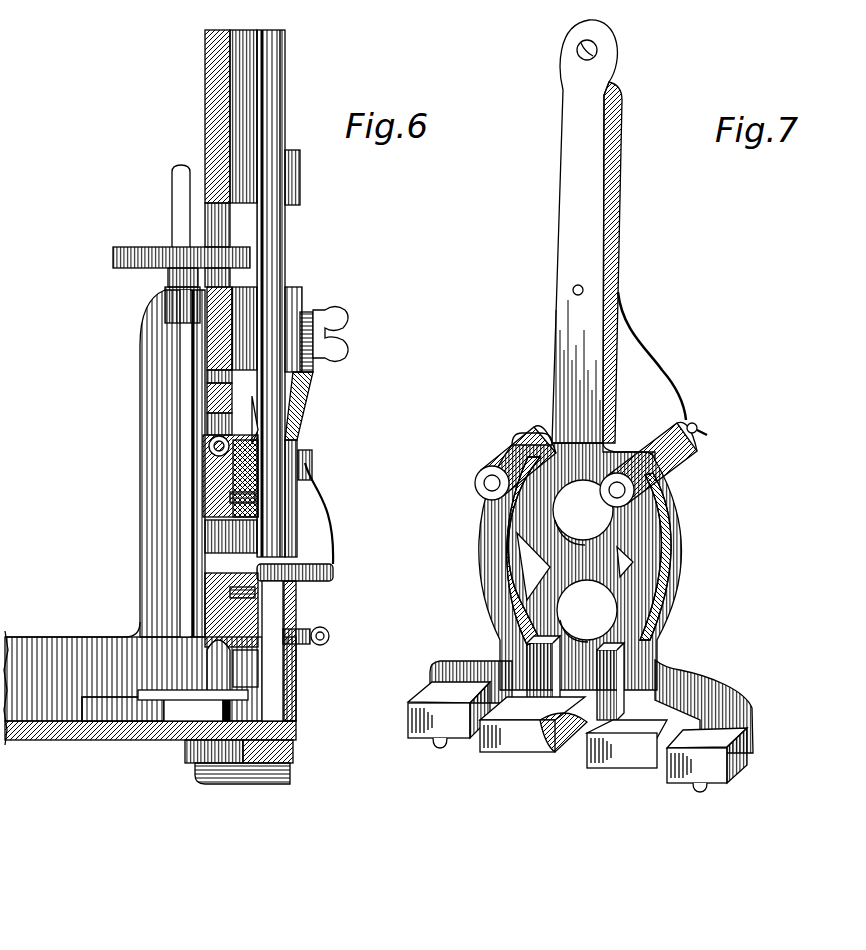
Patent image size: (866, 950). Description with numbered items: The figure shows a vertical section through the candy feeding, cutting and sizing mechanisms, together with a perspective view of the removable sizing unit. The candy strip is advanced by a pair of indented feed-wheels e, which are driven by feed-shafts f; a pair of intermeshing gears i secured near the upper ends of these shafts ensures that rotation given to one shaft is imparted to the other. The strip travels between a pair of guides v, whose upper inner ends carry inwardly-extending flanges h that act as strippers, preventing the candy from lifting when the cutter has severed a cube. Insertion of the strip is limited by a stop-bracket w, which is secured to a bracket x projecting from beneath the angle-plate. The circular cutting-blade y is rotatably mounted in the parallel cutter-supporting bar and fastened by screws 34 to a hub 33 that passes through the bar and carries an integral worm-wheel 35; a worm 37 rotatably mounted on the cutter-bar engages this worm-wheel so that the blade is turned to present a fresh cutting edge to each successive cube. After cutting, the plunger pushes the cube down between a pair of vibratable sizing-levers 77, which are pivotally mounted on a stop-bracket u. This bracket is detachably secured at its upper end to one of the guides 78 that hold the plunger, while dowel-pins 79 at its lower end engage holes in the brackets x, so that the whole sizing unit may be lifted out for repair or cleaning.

In FIG. 6, the intermeshing gears i is at (142, 246).
In FIG. 6, the feed-shafts f is at (181, 370).
In FIG. 6, the plunger guides 78 is at (297, 295).
In FIG. 6, the circular cutting-blade y is at (258, 431).
In FIG. 6, the worm 37 is at (208, 446).
In FIG. 6, the screws 34 is at (258, 501).
In FIG. 6, the hub 33 is at (223, 578).
In FIG. 6, the worm-wheel 35 is at (213, 618).
In FIG. 6, the guides v is at (138, 712).
In FIG. 6, the inwardly-extending flanges h is at (187, 690).
In FIG. 6, the indented feed-wheels e is at (201, 716).
In FIG. 6, the stop-bracket w is at (296, 711).
In FIG. 7, the stop-bracket w is at (572, 228).
In FIG. 6, the bracket x is at (297, 752).
In FIG. 6, the dowel-pins 79 is at (276, 759).
In FIG. 7, the dowel-pins 79 is at (440, 748).
In FIG. 7, the vibratable sizing-levers 77 is at (493, 573).
In FIG. 7, the stop-bracket u is at (587, 722).